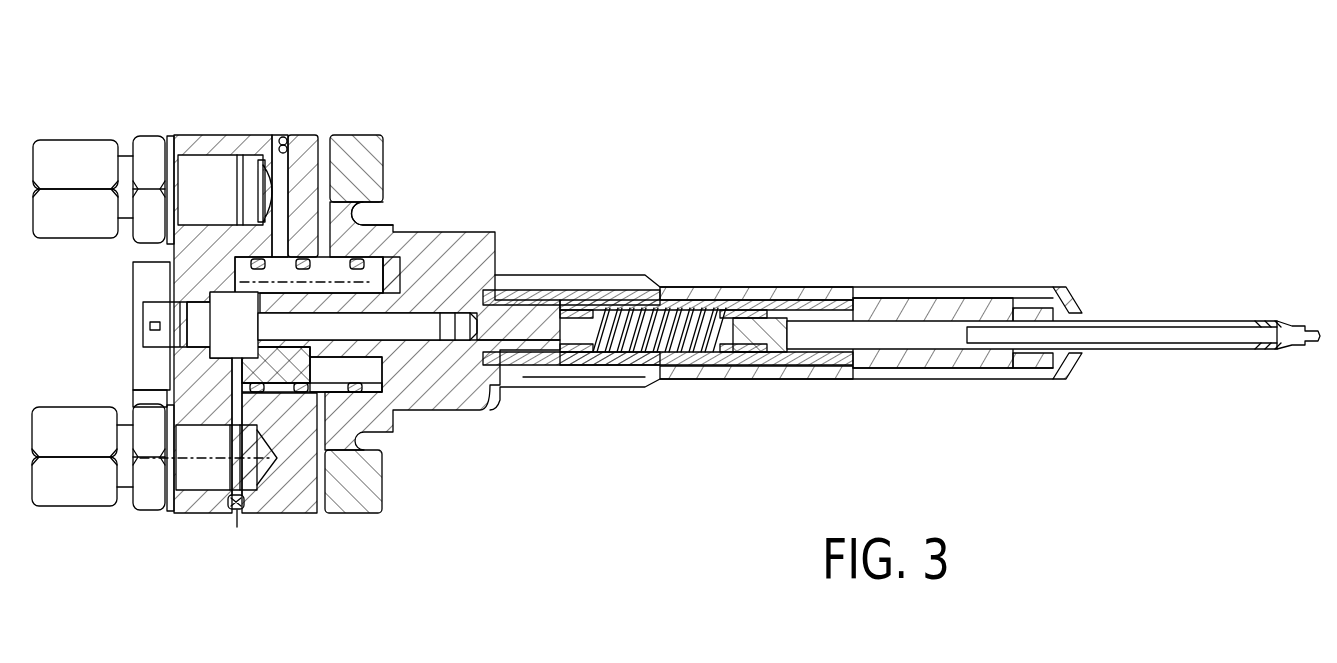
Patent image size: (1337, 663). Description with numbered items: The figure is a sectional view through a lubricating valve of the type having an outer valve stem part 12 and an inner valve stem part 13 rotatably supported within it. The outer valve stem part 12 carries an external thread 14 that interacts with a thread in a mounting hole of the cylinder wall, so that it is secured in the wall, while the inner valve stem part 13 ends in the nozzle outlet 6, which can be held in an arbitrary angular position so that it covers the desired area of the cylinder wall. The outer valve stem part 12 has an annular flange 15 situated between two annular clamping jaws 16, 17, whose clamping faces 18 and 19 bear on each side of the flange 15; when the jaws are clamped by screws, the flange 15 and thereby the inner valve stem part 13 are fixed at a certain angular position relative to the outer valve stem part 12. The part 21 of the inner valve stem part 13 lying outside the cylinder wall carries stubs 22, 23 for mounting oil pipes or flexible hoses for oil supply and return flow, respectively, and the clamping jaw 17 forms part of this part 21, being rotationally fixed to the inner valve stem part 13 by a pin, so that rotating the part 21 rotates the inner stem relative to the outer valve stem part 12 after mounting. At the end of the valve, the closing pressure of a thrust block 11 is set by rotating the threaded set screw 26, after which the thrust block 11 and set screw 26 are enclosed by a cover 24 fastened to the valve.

The nozzle outlet 6 is at (1320, 326).
The thrust block 11 is at (522, 355).
The outer valve stem part 12 is at (492, 232).
The inner valve stem part 13 is at (922, 300).
The external thread 14 is at (600, 275).
The annular flange 15 is at (362, 214).
The annular clamping jaw 16 is at (393, 150).
The annular clamping jaw 17 is at (316, 136).
The clamping face 18 is at (423, 232).
The clamping face 19 is at (332, 232).
The part of the inner valve stem part outside the cylinder wall 21 is at (230, 121).
The stub 22 is at (112, 138).
The stub 23 is at (97, 497).
The cover 24 is at (143, 372).
The set screw 26 is at (300, 330).